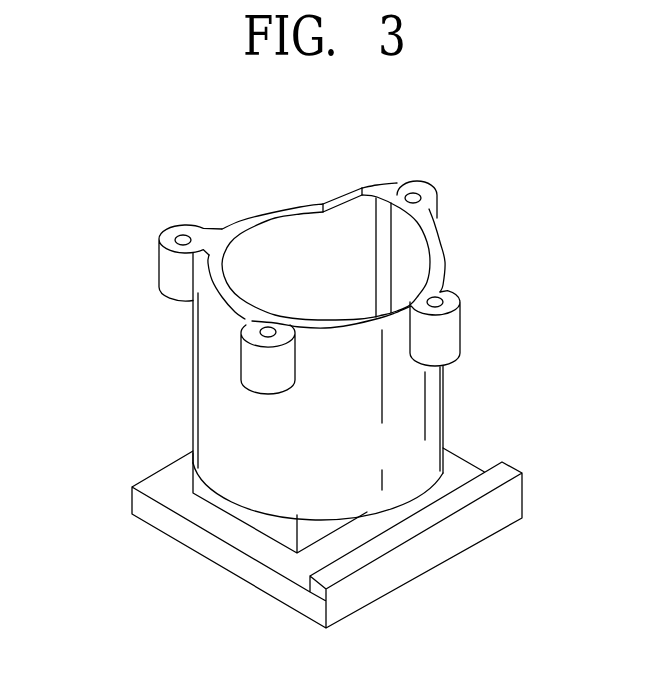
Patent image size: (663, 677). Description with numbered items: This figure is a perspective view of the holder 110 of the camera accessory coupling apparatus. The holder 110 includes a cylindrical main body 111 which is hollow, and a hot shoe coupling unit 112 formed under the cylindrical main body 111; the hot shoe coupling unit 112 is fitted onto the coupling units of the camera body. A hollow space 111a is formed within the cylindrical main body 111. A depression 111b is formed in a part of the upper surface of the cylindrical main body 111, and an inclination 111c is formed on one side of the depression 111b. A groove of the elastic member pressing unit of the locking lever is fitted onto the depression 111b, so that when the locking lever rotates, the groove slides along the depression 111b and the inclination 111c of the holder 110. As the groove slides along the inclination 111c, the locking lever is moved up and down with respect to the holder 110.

The holder 110 is at (165, 188).
The cylindrical main body 111 is at (432, 397).
The hollow space 111a is at (277, 269).
The depression 111b is at (288, 210).
The inclination 111c is at (345, 200).
The hot shoe coupling unit 112 is at (230, 557).